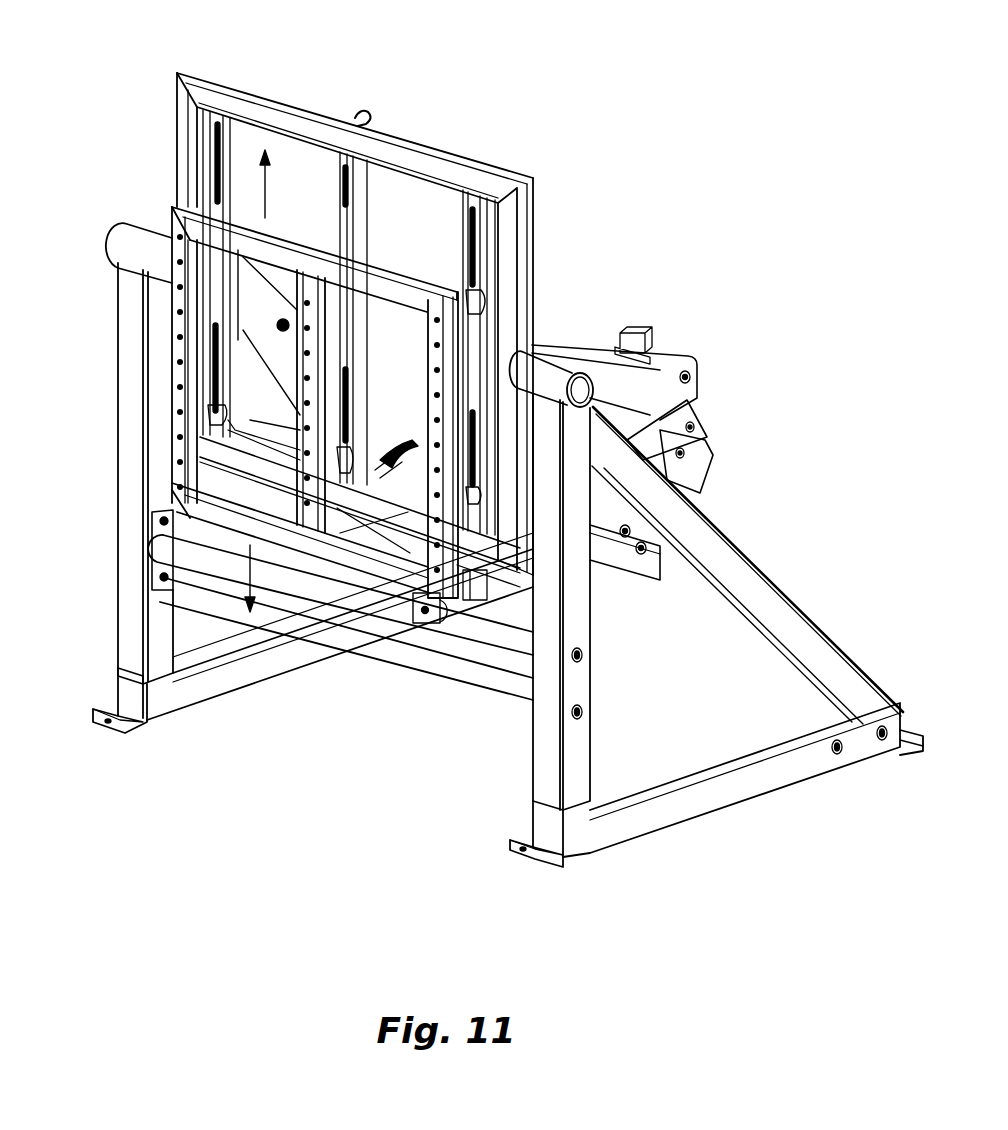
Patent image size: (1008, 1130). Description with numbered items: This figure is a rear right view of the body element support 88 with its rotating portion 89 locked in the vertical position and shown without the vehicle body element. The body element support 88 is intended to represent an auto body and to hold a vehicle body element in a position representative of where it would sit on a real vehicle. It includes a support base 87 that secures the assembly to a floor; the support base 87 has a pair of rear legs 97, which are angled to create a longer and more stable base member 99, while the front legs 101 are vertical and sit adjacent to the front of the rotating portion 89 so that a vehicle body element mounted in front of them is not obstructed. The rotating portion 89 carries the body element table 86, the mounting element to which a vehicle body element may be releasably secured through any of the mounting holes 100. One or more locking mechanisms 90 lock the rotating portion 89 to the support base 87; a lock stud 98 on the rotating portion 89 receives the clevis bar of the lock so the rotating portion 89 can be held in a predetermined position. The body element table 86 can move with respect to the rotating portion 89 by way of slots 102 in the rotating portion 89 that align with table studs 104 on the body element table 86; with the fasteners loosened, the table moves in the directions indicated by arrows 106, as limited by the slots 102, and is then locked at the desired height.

The body element table 86 is at (348, 582).
The support base 87 is at (788, 572).
The body element support 88 is at (760, 485).
The rotating portion 89 is at (540, 165).
The locking mechanism 90 is at (405, 418).
The rear legs 97 is at (727, 577).
The lock stud 98 is at (362, 118).
The base member 99 is at (230, 677).
The mounting holes 100 is at (180, 363).
The front legs 101 is at (165, 640).
The slots 102 is at (222, 140).
The table studs 104 is at (477, 303).
The arrows 106 is at (263, 207).